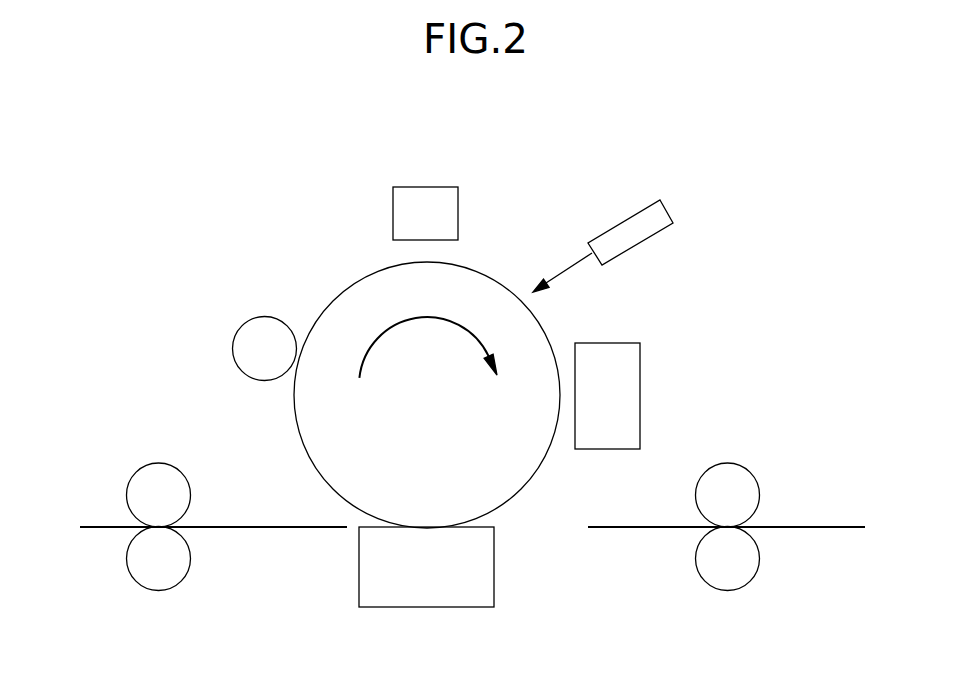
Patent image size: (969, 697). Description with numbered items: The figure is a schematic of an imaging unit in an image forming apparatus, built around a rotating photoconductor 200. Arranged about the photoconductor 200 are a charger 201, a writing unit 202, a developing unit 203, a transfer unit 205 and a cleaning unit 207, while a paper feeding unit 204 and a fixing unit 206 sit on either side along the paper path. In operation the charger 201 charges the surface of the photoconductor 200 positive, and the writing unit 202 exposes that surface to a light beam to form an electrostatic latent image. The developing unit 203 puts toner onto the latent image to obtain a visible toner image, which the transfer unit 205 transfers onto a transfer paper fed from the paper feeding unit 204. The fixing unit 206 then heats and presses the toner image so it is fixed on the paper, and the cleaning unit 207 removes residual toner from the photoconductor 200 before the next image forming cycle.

The photoconductor 200 is at (427, 395).
The charger 201 is at (392, 192).
The writing unit 202 is at (633, 215).
The developing unit 203 is at (609, 342).
The paper feeding unit 204 is at (765, 472).
The transfer unit 205 is at (400, 607).
The fixing unit 206 is at (137, 473).
The cleaning unit 207 is at (257, 317).